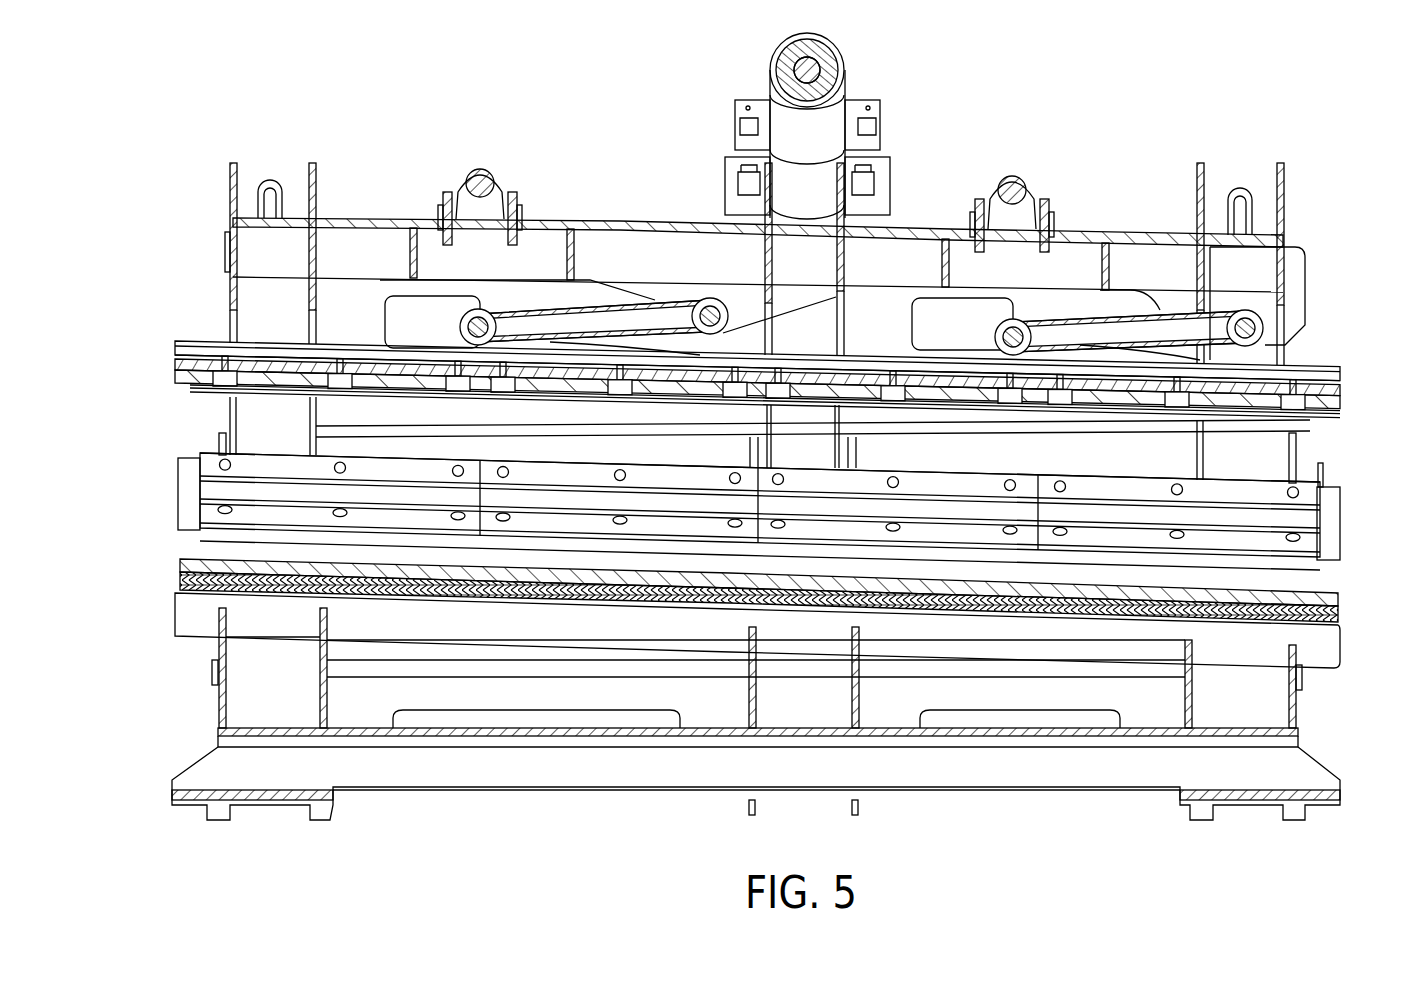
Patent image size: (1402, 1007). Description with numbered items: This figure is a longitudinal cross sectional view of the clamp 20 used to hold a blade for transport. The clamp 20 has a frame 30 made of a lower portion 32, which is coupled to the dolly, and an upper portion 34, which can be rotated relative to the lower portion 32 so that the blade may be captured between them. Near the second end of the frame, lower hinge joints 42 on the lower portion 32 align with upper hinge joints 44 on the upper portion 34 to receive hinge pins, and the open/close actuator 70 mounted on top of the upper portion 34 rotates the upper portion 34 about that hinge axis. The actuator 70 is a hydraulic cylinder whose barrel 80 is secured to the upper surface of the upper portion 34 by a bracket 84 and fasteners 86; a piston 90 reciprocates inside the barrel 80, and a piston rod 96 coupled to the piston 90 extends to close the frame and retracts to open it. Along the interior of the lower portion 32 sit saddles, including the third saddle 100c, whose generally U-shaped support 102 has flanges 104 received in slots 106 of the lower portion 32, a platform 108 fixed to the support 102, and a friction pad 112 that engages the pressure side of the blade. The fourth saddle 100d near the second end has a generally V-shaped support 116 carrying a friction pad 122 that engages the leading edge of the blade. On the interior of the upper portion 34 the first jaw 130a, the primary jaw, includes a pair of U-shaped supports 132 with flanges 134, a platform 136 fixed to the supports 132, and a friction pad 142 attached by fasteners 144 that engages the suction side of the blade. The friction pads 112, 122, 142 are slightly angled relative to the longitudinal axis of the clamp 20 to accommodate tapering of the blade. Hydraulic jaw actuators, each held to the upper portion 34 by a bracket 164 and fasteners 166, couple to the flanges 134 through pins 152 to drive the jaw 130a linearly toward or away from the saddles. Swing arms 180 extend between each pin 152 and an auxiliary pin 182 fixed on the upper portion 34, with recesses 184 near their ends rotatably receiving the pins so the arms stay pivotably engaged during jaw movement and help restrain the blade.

The clamp 20 is at (182, 88).
The frame 30 is at (686, 264).
The lower portion 32 is at (218, 708).
The upper portion 34 is at (228, 268).
The lower hinge joints 42 is at (220, 438).
The upper hinge joints 44 is at (230, 200).
The open/close actuator 70 is at (786, 177).
The barrel 80 is at (800, 42).
The bracket 84 is at (735, 140).
The fasteners 86 is at (740, 118).
The piston 90 is at (818, 50).
The piston rod 96 is at (820, 75).
The third saddle 100c is at (743, 602).
The fourth saddle 100d is at (736, 501).
The U-shaped support 102 is at (175, 605).
The flanges 104 is at (290, 628).
The slots 106 is at (327, 636).
The platform 108 is at (1336, 608).
The friction pad 112 is at (200, 563).
The V-shaped support 116 is at (1330, 490).
The friction pad 122 is at (1120, 492).
The first jaw 130a is at (720, 372).
The U-shaped supports 132 is at (175, 358).
The flanges 134 is at (272, 343).
The platform 136 is at (175, 376).
The friction pad 142 is at (280, 400).
The fasteners 144 is at (339, 356).
The pins 152 is at (470, 332).
The bracket 164 is at (480, 168).
The fasteners 166 is at (446, 190).
The swing arms 180 is at (655, 300).
The auxiliary pin 182 is at (722, 305).
The recesses 184 is at (478, 317).